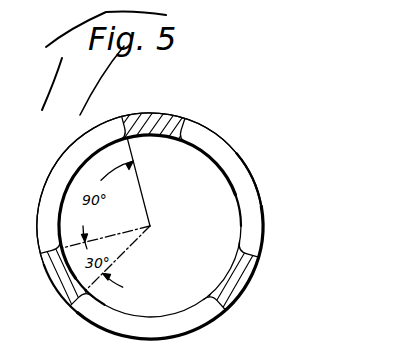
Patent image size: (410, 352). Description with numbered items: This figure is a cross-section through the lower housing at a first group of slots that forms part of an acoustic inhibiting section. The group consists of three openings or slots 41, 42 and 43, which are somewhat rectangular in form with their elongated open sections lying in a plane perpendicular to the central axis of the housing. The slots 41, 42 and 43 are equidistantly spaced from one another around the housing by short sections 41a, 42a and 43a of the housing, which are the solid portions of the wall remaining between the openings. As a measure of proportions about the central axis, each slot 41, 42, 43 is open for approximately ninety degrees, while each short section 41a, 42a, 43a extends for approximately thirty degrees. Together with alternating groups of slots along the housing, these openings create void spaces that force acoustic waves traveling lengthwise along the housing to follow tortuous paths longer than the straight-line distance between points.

The slot 41 is at (158, 320).
The short section of the housing 41a is at (46, 280).
The slot 42 is at (70, 153).
The short section of the housing 42a is at (158, 112).
The slot 43 is at (242, 160).
The short section of the housing 43a is at (247, 278).